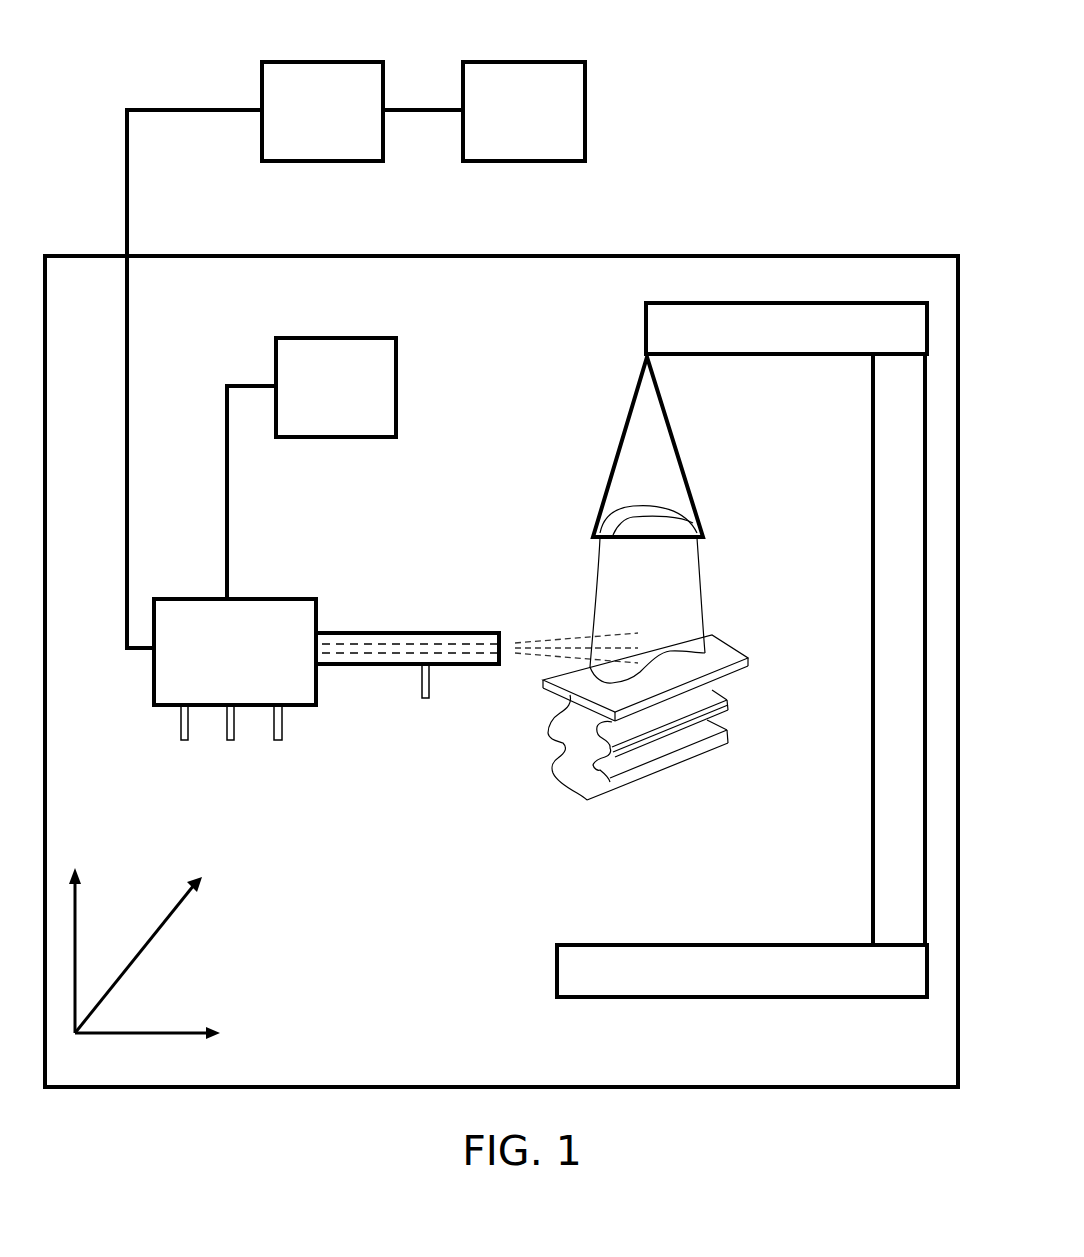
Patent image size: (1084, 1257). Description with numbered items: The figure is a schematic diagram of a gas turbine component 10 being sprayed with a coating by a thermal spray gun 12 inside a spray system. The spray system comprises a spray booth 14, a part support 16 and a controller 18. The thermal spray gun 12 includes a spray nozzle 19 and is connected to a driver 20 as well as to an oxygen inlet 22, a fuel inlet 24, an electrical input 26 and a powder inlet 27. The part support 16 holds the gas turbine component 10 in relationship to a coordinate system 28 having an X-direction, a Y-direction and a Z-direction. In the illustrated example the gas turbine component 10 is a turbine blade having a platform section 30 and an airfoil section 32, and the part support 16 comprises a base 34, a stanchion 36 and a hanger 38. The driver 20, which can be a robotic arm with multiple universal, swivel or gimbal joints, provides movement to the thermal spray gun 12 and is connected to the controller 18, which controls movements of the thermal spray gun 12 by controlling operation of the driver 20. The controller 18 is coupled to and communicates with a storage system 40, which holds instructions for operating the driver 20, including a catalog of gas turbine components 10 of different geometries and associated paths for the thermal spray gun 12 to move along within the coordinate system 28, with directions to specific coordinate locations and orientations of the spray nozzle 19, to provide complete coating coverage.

The gas turbine component 10 is at (742, 589).
The thermal spray gun 12 is at (286, 582).
The spray booth 14 is at (777, 253).
The part support 16 is at (622, 330).
The controller 18 is at (290, 60).
The spray nozzle 19 is at (360, 631).
The driver 20 is at (293, 335).
The oxygen inlet 22 is at (179, 723).
The fuel inlet 24 is at (282, 728).
The electrical input 26 is at (226, 733).
The powder inlet 27 is at (430, 690).
The coordinate system 28 is at (165, 1002).
The platform section 30 is at (703, 698).
The airfoil section 32 is at (683, 577).
The base 34 is at (607, 962).
The stanchion 36 is at (894, 897).
The hanger 38 is at (685, 467).
The storage system 40 is at (488, 61).